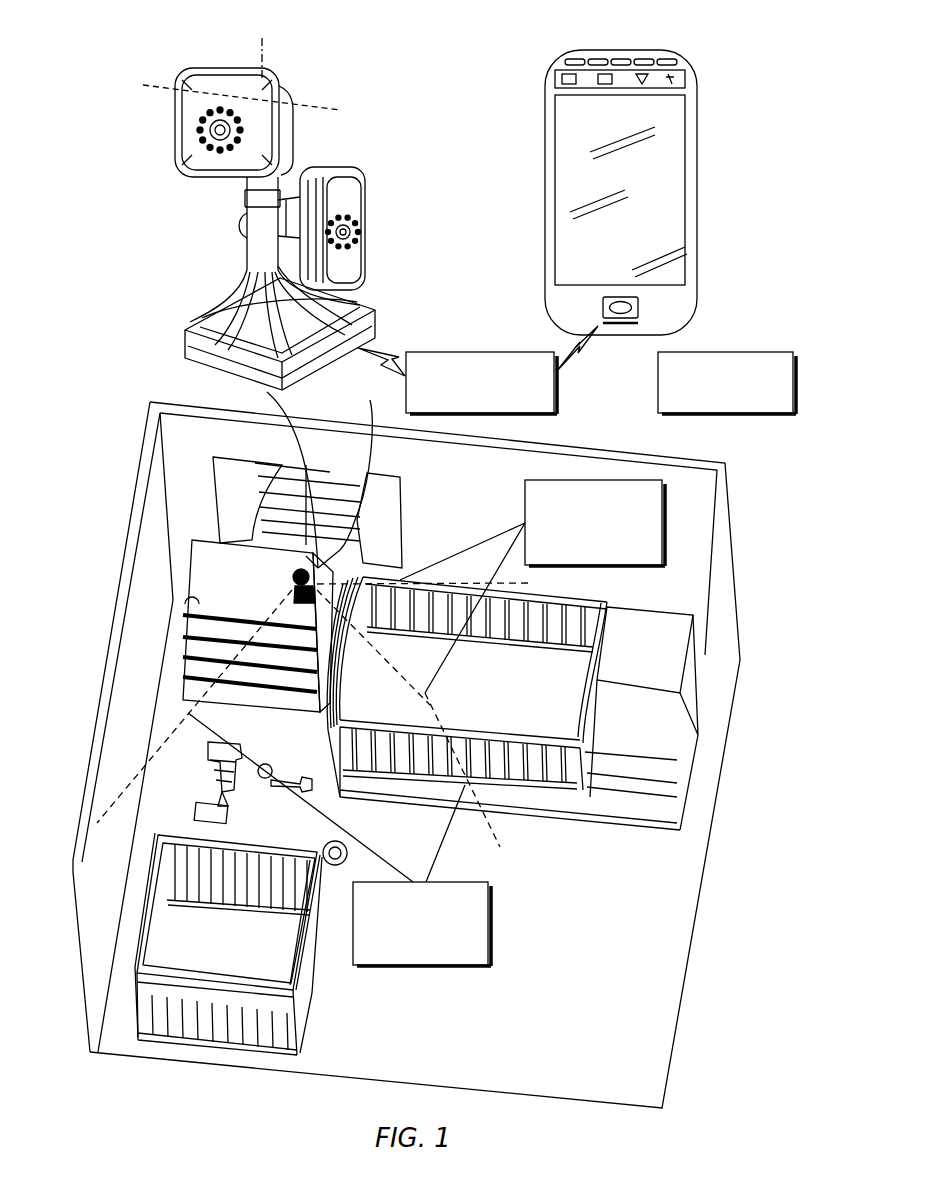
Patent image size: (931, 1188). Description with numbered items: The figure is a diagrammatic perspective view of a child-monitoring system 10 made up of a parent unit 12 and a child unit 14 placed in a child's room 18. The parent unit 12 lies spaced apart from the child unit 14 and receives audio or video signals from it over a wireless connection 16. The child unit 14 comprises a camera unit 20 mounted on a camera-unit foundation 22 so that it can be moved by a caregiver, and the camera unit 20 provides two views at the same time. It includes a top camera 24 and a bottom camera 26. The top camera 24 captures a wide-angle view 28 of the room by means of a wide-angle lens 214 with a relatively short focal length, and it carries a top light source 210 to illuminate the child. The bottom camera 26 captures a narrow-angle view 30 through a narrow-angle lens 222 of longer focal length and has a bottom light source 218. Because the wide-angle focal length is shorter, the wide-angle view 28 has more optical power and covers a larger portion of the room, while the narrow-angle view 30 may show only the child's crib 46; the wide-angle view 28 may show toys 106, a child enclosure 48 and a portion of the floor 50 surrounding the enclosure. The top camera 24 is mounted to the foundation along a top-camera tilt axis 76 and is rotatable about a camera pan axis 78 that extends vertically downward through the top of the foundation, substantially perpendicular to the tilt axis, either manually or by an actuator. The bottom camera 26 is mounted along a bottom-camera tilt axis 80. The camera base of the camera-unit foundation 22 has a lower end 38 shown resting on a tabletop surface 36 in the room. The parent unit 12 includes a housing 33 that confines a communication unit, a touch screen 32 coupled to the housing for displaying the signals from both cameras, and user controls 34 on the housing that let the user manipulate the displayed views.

The child-monitoring system 10 is at (735, 145).
The parent unit 12 is at (748, 352).
The child unit 14 is at (340, 92).
The wireless connection 16 is at (482, 352).
The child's room 18 is at (735, 495).
The camera unit 20 is at (365, 218).
The camera-unit foundation 22 is at (285, 152).
The top camera 24 is at (178, 106).
The bottom camera 26 is at (352, 186).
The wide-angle view 28 is at (458, 966).
The narrow-angle view 30 is at (610, 566).
The touch screen 32 is at (672, 220).
The housing 33 is at (690, 296).
The user controls 34 is at (575, 60).
The tabletop surface 36 is at (192, 604).
The lower end 38 is at (192, 372).
The child's crib 46 is at (668, 604).
The child enclosure 48 is at (130, 932).
The floor 50 is at (672, 882).
The top-camera tilt axis 76 is at (162, 84).
The camera pan axis 78 is at (265, 60).
The bottom-camera tilt axis 80 is at (230, 252).
The toys 106 is at (310, 790).
The top light source 210 is at (222, 102).
The wide-angle lens 214 is at (205, 150).
The bottom light source 218 is at (352, 264).
The narrow-angle lens 222 is at (355, 241).